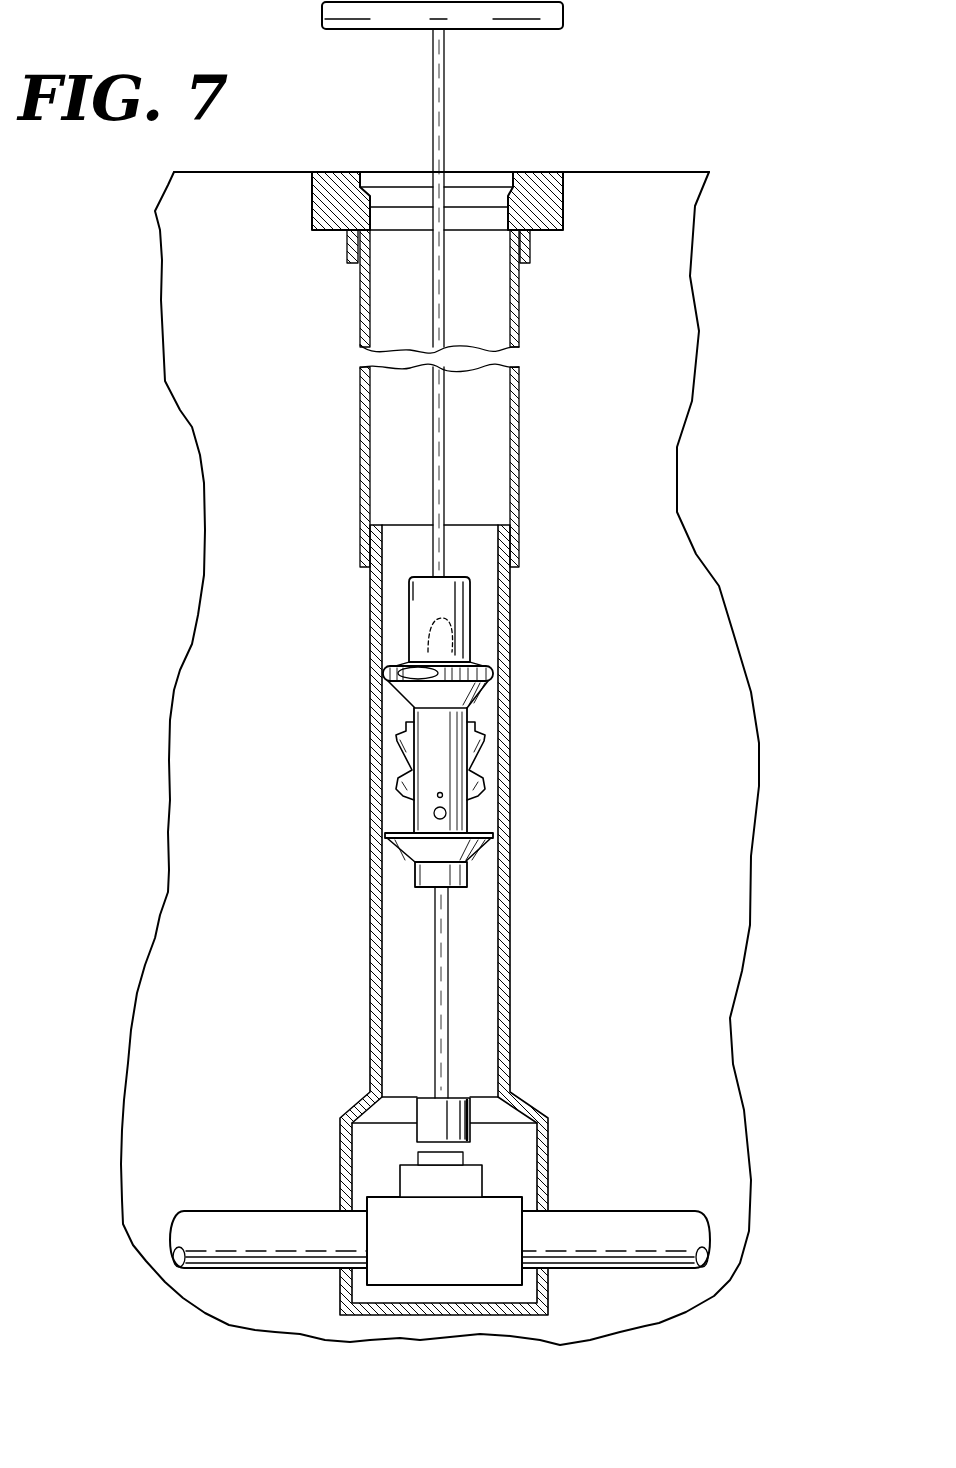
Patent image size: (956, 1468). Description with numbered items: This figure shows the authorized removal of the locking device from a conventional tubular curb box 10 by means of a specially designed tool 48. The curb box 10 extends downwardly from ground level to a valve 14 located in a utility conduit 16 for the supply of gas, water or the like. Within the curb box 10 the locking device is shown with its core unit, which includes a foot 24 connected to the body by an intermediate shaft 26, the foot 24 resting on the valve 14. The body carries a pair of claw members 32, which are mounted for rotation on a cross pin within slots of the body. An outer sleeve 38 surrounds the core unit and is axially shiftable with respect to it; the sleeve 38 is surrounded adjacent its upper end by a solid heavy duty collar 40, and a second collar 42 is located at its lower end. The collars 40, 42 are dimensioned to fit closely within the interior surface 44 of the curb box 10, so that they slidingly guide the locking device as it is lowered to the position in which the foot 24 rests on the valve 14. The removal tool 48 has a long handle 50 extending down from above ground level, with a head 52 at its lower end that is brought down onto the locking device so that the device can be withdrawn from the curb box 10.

The curb box 10 is at (548, 547).
The valve 14 is at (492, 1178).
The utility conduit 16 is at (600, 1212).
The foot 24 is at (465, 1115).
The intermediate shaft 26 is at (450, 1002).
The claw members 32 is at (403, 748).
The outer sleeve 38 is at (460, 815).
The collar 40 is at (494, 673).
The second collar 42 is at (410, 850).
The interior surface 44 is at (482, 918).
The tool 48 is at (478, 468).
The handle 50 is at (446, 281).
The head 52 is at (462, 620).